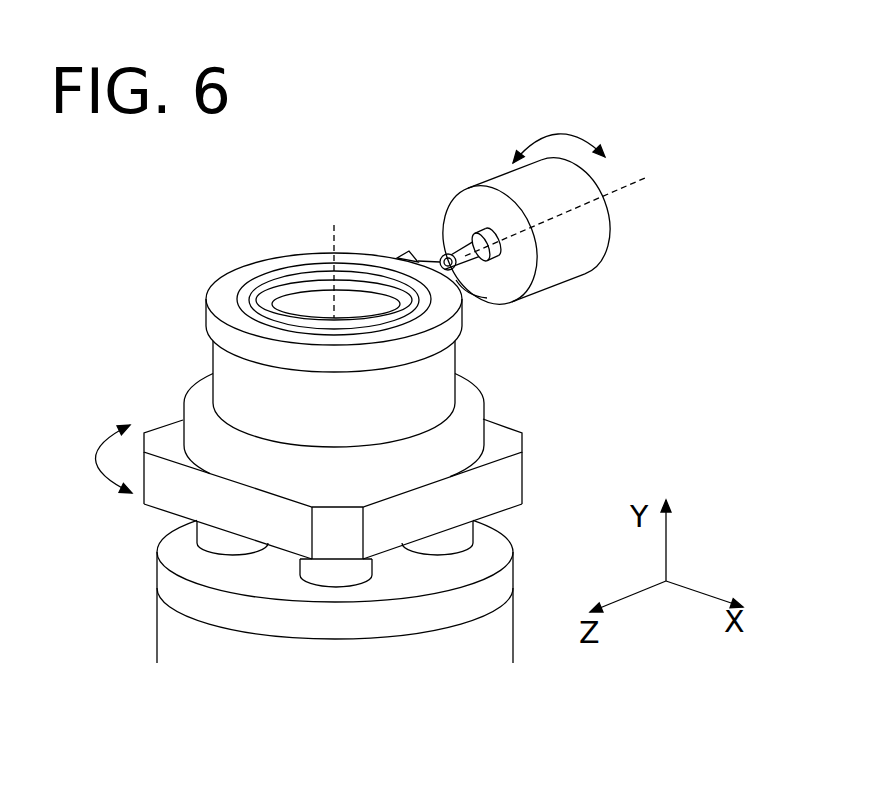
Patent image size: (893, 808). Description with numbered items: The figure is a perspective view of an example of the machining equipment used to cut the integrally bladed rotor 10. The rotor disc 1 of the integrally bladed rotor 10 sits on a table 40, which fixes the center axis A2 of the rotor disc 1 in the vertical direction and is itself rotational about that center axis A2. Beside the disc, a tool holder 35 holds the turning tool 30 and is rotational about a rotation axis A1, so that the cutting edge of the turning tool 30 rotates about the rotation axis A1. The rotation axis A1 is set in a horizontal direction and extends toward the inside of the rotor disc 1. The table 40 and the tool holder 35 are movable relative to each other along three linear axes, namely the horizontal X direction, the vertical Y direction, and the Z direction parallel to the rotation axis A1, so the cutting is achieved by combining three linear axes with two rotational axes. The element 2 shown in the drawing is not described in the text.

The integrally bladed rotor 10 is at (236, 240).
The rotor disc 1 is at (300, 252).
The workpiece 2 is at (478, 292).
The turning tool 30 is at (438, 255).
The tool holder 35 is at (565, 267).
The table 40 is at (526, 455).
The rotation axis A1 is at (560, 202).
The center axis A2 is at (340, 256).